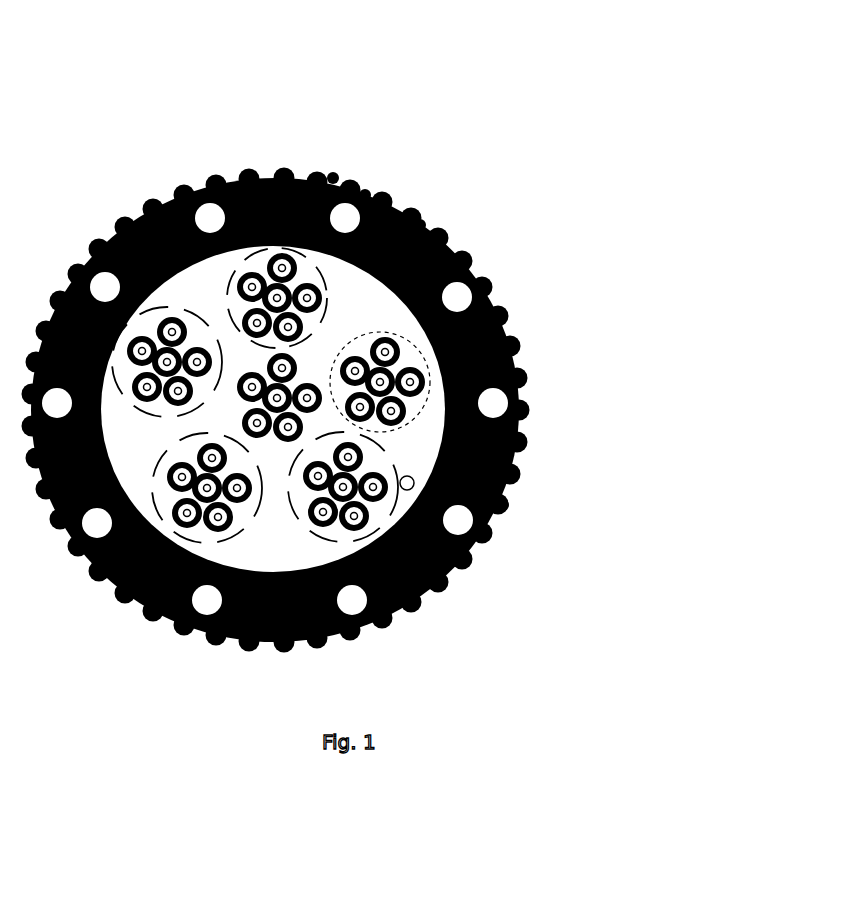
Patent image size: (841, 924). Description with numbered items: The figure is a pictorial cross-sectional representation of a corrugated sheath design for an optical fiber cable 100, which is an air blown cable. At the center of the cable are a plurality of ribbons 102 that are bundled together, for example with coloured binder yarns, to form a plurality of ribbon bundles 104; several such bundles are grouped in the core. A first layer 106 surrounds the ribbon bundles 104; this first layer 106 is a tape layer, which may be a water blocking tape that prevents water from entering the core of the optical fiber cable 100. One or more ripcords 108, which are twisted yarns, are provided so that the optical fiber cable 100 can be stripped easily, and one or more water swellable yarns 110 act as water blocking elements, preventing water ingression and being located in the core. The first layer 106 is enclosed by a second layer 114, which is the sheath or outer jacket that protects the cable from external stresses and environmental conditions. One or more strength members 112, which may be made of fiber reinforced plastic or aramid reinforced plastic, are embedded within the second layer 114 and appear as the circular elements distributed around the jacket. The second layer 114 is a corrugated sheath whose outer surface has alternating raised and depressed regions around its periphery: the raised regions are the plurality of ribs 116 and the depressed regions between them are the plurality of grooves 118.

The optical fiber cable 100 is at (134, 76).
The ribbons 102 is at (296, 298).
The ribbon bundles 104 is at (517, 356).
The first layer 106 is at (414, 481).
The ripcords 108 is at (445, 425).
The water swellable yarns 110 is at (503, 506).
The strength members 112 is at (367, 605).
The second layer 114 is at (415, 222).
The ribs 116 is at (362, 192).
The grooves 118 is at (330, 178).